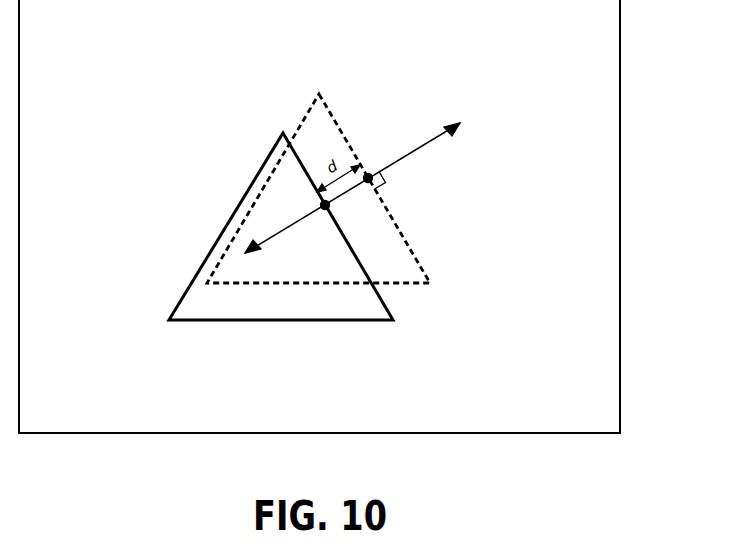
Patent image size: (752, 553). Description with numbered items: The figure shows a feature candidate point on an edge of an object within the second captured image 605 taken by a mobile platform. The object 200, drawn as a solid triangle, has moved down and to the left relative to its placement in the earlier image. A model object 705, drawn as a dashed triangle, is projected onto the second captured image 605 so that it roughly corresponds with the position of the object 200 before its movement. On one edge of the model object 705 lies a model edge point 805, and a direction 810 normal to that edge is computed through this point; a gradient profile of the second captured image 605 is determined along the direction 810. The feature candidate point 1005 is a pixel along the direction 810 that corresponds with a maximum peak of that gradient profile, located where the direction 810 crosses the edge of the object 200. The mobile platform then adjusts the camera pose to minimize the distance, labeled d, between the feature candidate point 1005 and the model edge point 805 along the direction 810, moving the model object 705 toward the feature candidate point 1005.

The second captured image 605 is at (620, 77).
The object 200 is at (396, 320).
The model object 705 is at (332, 110).
The model edge point 805 is at (368, 174).
The direction 810 is at (435, 142).
The feature candidate point 1005 is at (329, 209).